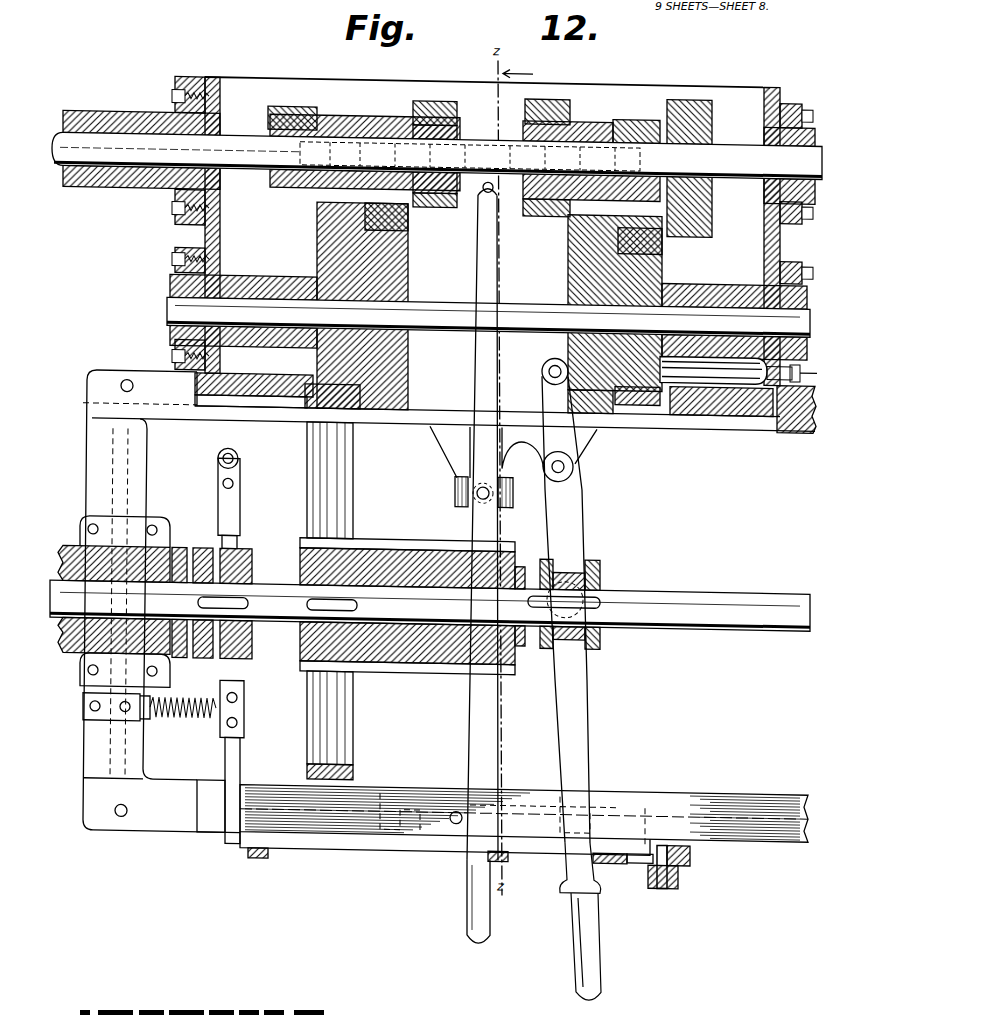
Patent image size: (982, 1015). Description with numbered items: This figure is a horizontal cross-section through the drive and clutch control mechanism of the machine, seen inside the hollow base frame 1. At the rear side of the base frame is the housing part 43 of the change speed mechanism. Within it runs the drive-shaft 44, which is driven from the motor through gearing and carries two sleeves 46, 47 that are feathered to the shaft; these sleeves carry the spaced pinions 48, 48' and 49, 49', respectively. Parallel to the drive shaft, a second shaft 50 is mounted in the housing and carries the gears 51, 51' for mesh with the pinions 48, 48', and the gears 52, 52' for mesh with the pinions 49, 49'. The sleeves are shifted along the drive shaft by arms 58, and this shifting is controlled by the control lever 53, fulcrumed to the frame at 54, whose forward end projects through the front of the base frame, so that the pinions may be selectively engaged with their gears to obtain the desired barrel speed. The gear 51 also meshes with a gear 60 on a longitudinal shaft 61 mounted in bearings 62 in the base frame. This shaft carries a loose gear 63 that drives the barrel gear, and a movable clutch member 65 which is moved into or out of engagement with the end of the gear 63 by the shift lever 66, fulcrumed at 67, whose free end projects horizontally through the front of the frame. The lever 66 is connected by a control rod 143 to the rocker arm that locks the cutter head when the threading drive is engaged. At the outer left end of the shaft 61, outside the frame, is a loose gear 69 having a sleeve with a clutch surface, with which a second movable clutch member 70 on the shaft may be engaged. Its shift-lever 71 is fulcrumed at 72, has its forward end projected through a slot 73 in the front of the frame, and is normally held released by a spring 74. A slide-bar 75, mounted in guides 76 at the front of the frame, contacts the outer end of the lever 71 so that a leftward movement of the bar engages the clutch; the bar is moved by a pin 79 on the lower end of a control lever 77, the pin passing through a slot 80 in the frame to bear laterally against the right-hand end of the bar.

The hollow base frame 1 is at (160, 822).
The housing part 43 is at (215, 245).
The drive-shaft 44 is at (148, 158).
The sleeve 46 is at (330, 120).
The sleeve 47 is at (580, 118).
The pinion 48 is at (292, 108).
The pinion 48' is at (457, 104).
The pinion 49 is at (557, 91).
The pinion 49' is at (691, 101).
The second shaft 50 is at (432, 296).
The gear 51 is at (346, 306).
The gear 51' is at (407, 226).
The gear 52 is at (592, 314).
The gear 52' is at (689, 222).
The control lever 53 is at (485, 240).
The fulcrum 54 is at (455, 495).
The arm 58 is at (375, 124).
The gear 60 is at (355, 494).
The shaft 61 is at (698, 591).
The bearing 62 is at (95, 660).
The loose gear 63 is at (425, 650).
The movable clutch member 65 is at (600, 565).
The shift lever 66 is at (585, 731).
The fulcrum 67 is at (575, 460).
The loose gear 69 is at (68, 552).
The movable clutch member 70 is at (252, 565).
The shift-lever 71 is at (240, 752).
The fulcrum 72 is at (240, 460).
The slot 73 is at (210, 830).
The spring 74 is at (195, 718).
The slide-bar 75 is at (392, 845).
The guides 76 is at (258, 857).
The control lever 77 is at (700, 873).
The pin 79 is at (675, 837).
The slot 80 is at (645, 859).
The control rod 143 is at (723, 378).